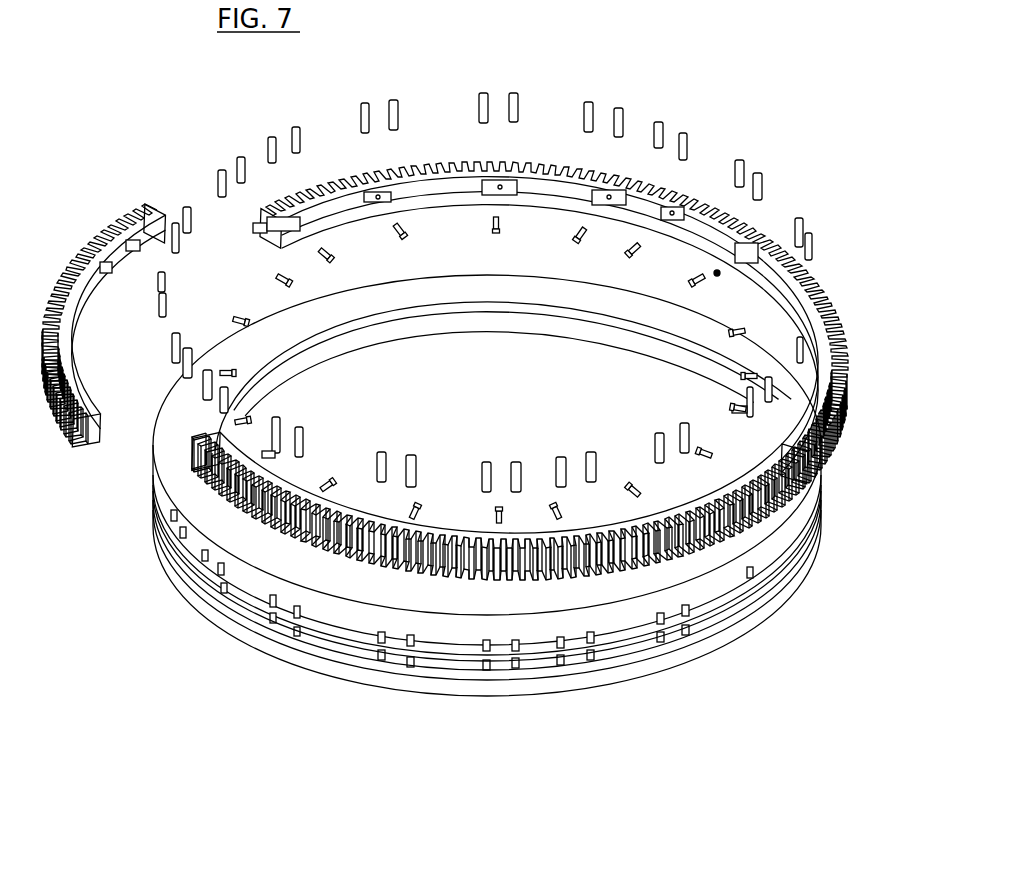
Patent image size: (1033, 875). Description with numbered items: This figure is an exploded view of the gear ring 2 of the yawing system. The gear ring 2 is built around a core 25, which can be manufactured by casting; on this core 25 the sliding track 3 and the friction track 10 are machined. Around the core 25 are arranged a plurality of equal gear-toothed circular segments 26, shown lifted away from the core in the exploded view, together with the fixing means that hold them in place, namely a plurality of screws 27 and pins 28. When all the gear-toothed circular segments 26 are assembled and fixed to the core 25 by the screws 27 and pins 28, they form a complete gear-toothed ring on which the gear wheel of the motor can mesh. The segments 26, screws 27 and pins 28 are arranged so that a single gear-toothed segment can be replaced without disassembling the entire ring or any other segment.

The gear ring 2 is at (722, 90).
The sliding track 3 is at (358, 612).
The friction track 10 is at (492, 718).
The core 25 is at (232, 623).
The gear-toothed circular segments 26 is at (92, 233).
The screws 27 is at (696, 283).
The pins 28 is at (517, 108).